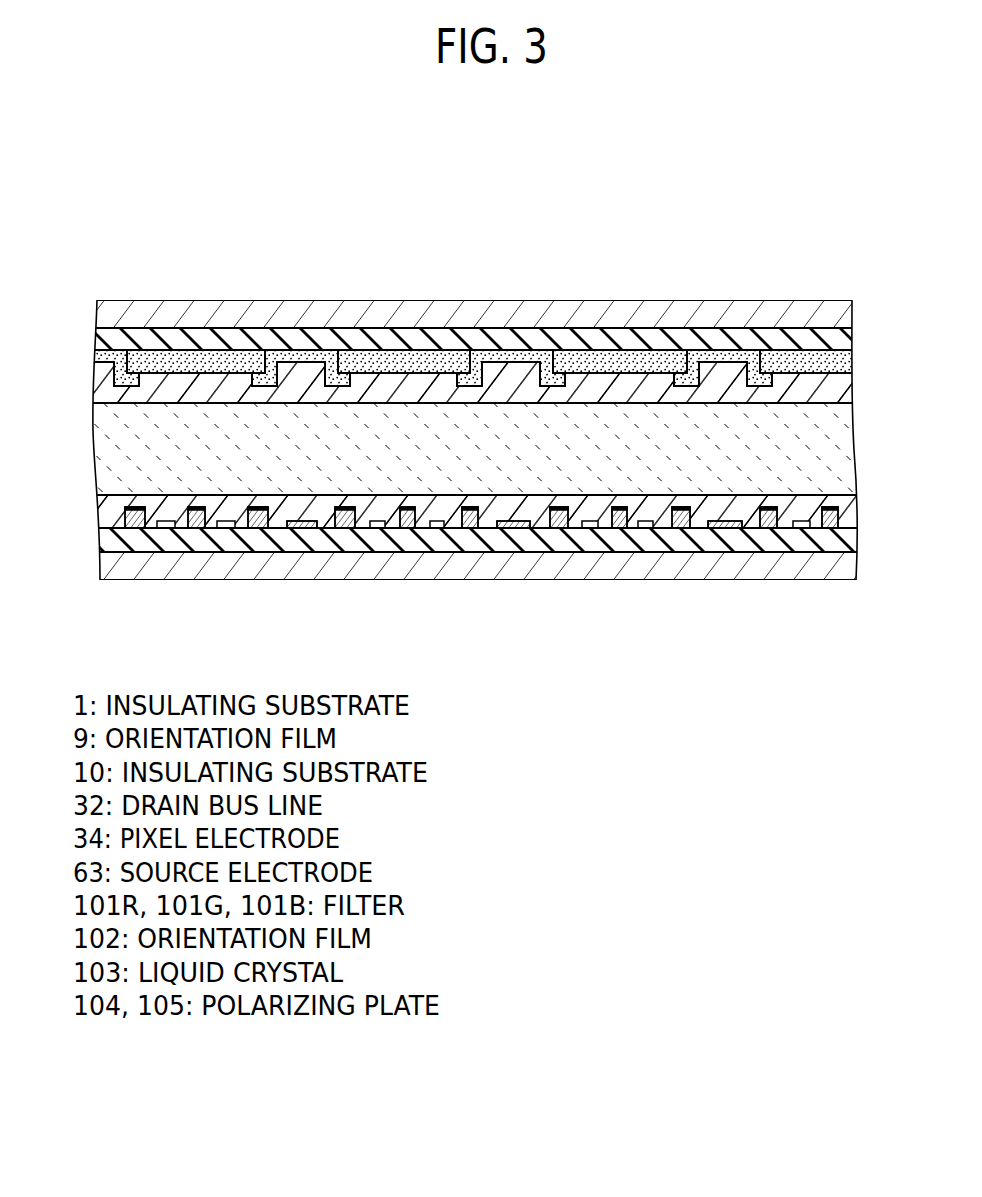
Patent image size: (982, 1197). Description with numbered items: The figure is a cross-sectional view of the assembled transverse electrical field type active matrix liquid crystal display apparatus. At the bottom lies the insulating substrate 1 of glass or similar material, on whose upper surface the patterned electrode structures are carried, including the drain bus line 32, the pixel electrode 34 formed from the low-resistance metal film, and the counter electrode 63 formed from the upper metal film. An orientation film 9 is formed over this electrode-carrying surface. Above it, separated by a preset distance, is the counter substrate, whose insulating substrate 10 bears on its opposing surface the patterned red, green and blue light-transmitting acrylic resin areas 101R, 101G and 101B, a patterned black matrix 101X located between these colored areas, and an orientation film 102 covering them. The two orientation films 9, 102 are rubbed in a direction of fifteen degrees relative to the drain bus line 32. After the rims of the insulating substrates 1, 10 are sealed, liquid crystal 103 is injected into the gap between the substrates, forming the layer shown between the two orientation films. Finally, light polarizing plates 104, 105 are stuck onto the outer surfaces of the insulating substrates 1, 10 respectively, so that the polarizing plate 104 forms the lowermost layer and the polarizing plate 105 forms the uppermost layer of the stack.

The insulating substrate 1 is at (832, 542).
The orientation film 9 is at (172, 508).
The insulating substrate 10 is at (820, 335).
The drain bus line 32 is at (302, 537).
The pixel electrode 34 is at (407, 528).
The counter electrode 63 is at (490, 522).
The red light-transmitting acrylic resin area 101R is at (238, 358).
The green light-transmitting acrylic resin area 101G is at (447, 360).
The blue light-transmitting acrylic resin area 101B is at (610, 360).
The black matrix 101X is at (307, 353).
The orientation film 102 is at (180, 388).
The liquid crystal 103 is at (703, 450).
The light polarizing plate 104 is at (780, 573).
The light polarizing plate 105 is at (765, 310).